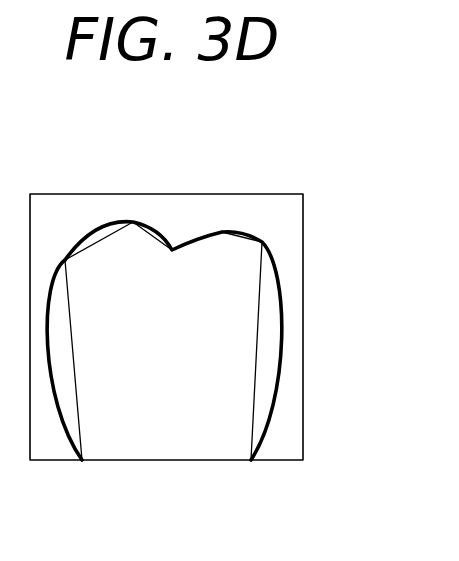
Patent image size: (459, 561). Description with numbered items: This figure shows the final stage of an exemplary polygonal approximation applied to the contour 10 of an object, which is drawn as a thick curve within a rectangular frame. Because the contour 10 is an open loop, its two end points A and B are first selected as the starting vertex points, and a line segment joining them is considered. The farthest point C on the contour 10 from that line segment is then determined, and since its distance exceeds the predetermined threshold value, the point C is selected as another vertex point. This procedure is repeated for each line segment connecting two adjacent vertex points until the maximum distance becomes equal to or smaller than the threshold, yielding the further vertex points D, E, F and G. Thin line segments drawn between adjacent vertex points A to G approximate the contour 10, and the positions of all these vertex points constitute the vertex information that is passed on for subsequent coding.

The contour 10 is at (251, 237).
The starting vertex point A is at (82, 460).
The starting vertex point B is at (251, 460).
The vertex point C is at (133, 222).
The vertex point D is at (65, 260).
The vertex point E is at (262, 242).
The vertex point F is at (172, 250).
The vertex point G is at (222, 232).